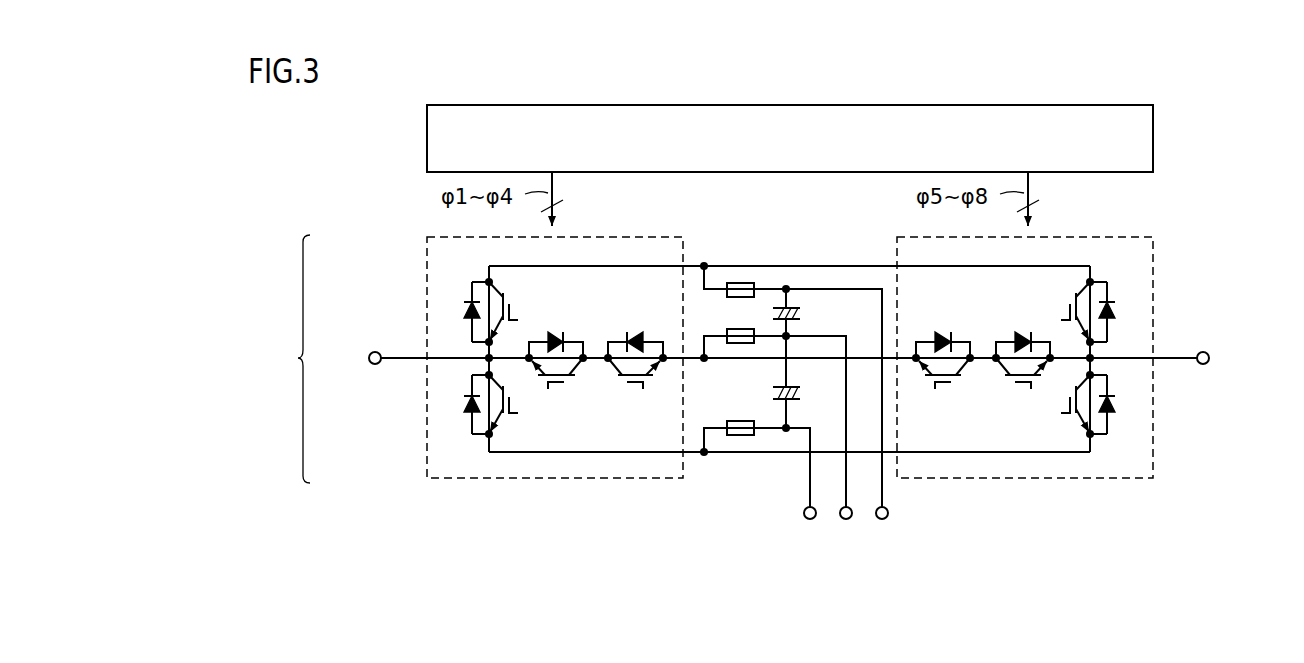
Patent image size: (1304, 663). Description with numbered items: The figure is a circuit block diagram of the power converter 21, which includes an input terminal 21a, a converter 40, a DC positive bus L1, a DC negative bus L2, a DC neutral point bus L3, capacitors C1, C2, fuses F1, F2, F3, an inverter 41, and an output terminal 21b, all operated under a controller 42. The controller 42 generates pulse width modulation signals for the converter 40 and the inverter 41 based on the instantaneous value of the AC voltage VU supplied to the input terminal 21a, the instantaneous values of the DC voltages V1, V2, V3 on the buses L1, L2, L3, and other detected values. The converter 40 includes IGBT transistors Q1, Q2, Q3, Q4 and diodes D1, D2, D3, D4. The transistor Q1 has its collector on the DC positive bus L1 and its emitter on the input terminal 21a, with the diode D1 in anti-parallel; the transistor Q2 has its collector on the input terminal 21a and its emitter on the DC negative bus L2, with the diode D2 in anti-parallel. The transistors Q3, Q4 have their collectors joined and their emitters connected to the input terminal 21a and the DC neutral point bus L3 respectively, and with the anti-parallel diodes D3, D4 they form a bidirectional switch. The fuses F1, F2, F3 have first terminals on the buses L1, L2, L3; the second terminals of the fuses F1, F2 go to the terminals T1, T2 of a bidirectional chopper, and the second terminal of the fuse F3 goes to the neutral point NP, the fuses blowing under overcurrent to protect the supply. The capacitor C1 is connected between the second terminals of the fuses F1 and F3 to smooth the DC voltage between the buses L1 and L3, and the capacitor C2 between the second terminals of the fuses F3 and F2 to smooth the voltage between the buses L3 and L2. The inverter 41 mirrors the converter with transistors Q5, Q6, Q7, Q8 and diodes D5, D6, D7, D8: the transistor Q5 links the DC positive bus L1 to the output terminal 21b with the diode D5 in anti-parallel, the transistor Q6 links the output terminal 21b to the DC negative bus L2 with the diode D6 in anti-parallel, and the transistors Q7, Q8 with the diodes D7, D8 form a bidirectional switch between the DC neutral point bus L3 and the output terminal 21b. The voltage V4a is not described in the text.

The power converter 21 is at (290, 359).
The input terminal 21a is at (374, 352).
The output terminal 21b is at (1205, 352).
The converter 40 is at (427, 257).
The inverter 41 is at (1153, 258).
The controller 42 is at (1153, 142).
The AC voltage VU is at (347, 359).
The output voltage terminal V4a is at (1237, 359).
The diode D1 is at (468, 308).
The diode D2 is at (468, 406).
The diode D3 is at (556, 330).
The diode D4 is at (636, 330).
The diode D5 is at (1112, 308).
The diode D6 is at (1112, 406).
The diode D7 is at (937, 330).
The diode D8 is at (1017, 330).
The transistor Q1 is at (508, 312).
The transistor Q2 is at (508, 406).
The transistor Q3 is at (548, 389).
The transistor Q4 is at (643, 389).
The transistor Q5 is at (1068, 312).
The transistor Q6 is at (1068, 406).
The transistor Q7 is at (935, 389).
The transistor Q8 is at (1031, 389).
The fuse F1 is at (740, 281).
The fuse F2 is at (740, 436).
The fuse F3 is at (740, 328).
The DC positive bus L1 is at (812, 264).
The DC negative bus L2 is at (775, 456).
The DC neutral point bus L3 is at (741, 362).
The capacitor C1 is at (798, 306).
The capacitor C2 is at (795, 400).
The DC voltage V1 is at (704, 262).
The DC voltage V2 is at (704, 456).
The DC voltage V3 is at (704, 362).
The terminal T1 is at (882, 520).
The terminal T2 is at (810, 520).
The neutral point NP is at (846, 520).